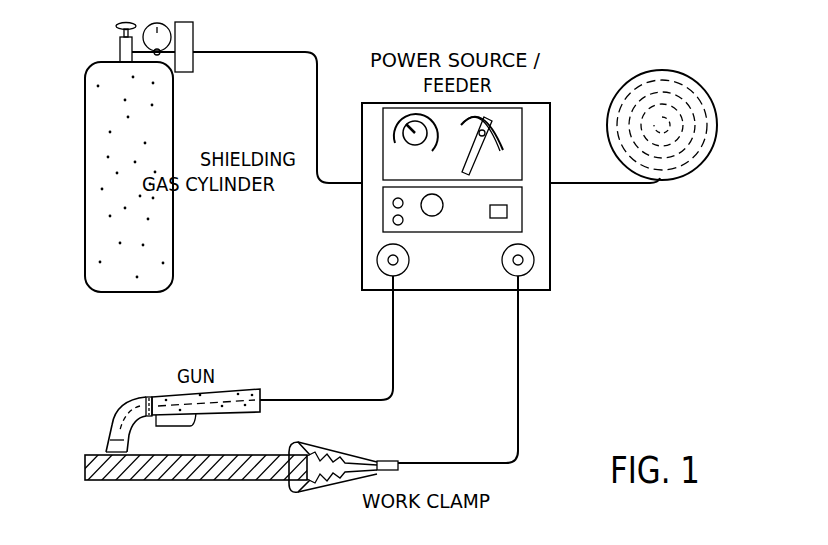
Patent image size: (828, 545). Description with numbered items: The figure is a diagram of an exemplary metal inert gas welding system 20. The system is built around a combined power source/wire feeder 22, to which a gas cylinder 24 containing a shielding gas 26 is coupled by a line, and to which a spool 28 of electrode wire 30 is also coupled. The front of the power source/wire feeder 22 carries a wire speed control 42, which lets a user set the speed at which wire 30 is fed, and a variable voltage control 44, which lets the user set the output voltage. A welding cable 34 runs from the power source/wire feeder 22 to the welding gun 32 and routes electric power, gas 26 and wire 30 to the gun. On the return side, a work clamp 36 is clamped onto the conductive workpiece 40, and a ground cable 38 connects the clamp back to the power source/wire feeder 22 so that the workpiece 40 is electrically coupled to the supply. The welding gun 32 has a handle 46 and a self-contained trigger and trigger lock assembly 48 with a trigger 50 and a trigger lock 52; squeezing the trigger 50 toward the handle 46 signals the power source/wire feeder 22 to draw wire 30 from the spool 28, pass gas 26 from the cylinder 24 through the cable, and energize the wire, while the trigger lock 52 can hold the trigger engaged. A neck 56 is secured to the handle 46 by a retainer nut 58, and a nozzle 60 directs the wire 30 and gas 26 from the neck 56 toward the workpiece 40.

The welding system 20 is at (480, 32).
The power source/wire feeder 22 is at (540, 100).
The gas cylinder 24 is at (84, 124).
The gas 26 is at (140, 258).
The spool 28 is at (712, 146).
The electrode wire 30 is at (680, 93).
The welding gun 32 is at (244, 386).
The welding cable 34 is at (395, 347).
The work clamp 36 is at (347, 448).
The ground cable 38 is at (520, 342).
The workpiece 40 is at (235, 472).
The wire speed control 42 is at (398, 118).
The variable voltage control 44 is at (508, 136).
The handle 46 is at (228, 412).
The self-contained trigger and trigger lock assembly 48 is at (188, 421).
The trigger 50 is at (210, 414).
The trigger lock 52 is at (157, 424).
The neck 56 is at (126, 398).
The retainer nut 58 is at (147, 403).
The nozzle 60 is at (106, 448).